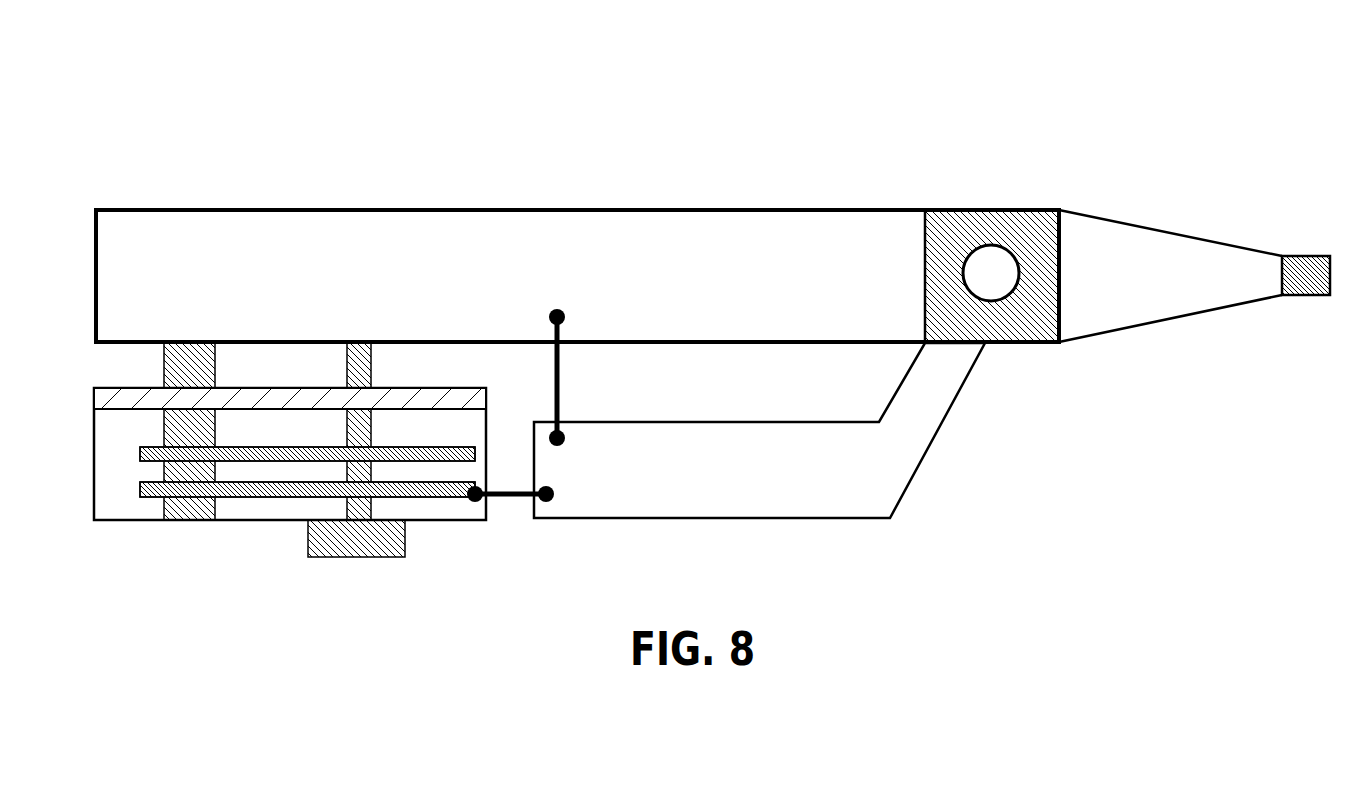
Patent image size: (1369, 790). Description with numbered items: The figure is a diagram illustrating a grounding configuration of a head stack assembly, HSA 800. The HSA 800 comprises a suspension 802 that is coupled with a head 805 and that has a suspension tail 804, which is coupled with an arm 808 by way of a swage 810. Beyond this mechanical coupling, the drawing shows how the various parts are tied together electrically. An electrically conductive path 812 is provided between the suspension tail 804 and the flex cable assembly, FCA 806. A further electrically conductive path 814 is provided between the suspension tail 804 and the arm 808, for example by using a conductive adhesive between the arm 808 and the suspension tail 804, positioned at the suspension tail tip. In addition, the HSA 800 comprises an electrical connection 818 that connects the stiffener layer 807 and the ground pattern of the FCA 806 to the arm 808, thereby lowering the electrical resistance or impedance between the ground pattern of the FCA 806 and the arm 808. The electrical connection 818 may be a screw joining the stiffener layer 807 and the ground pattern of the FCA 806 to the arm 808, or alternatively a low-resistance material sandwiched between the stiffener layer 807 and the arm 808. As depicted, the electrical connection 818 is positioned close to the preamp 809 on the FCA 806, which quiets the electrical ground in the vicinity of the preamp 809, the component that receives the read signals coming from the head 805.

The HSA 800 is at (156, 98).
The suspension 802 is at (1127, 285).
The suspension tail 804 is at (868, 502).
The head 805 is at (1333, 283).
The FCA 806 is at (110, 505).
The stiffener layer 807 is at (93, 403).
The arm 808 is at (158, 263).
The preamp 809 is at (358, 557).
The swage 810 is at (984, 257).
The electrically conductive path 812 is at (515, 500).
The electrically conductive path 814 is at (560, 378).
The electrical connection 818 is at (373, 357).